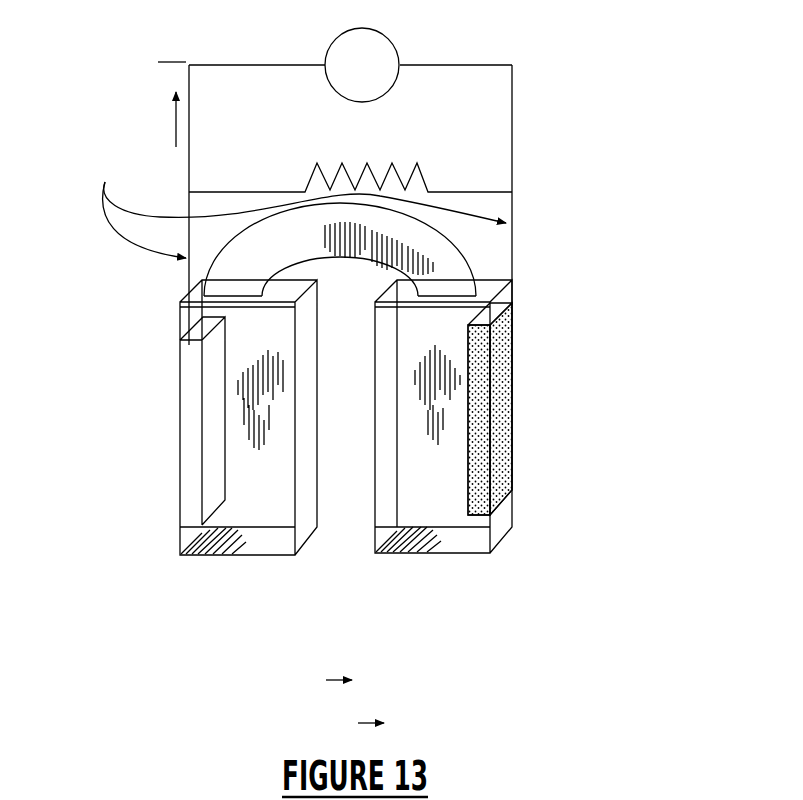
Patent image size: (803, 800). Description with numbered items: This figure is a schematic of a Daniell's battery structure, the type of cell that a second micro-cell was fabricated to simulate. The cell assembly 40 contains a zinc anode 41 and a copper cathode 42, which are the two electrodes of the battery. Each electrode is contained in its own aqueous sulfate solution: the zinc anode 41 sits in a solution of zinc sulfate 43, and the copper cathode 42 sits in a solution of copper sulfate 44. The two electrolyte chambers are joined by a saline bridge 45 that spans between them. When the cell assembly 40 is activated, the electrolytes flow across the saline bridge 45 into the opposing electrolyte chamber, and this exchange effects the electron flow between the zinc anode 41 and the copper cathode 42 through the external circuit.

The cell assembly 40 is at (565, 153).
The zinc anode 41 is at (188, 360).
The copper cathode 42 is at (499, 348).
The zinc sulfate 43 is at (246, 456).
The copper sulfate 44 is at (422, 475).
The saline bridge 45 is at (351, 265).